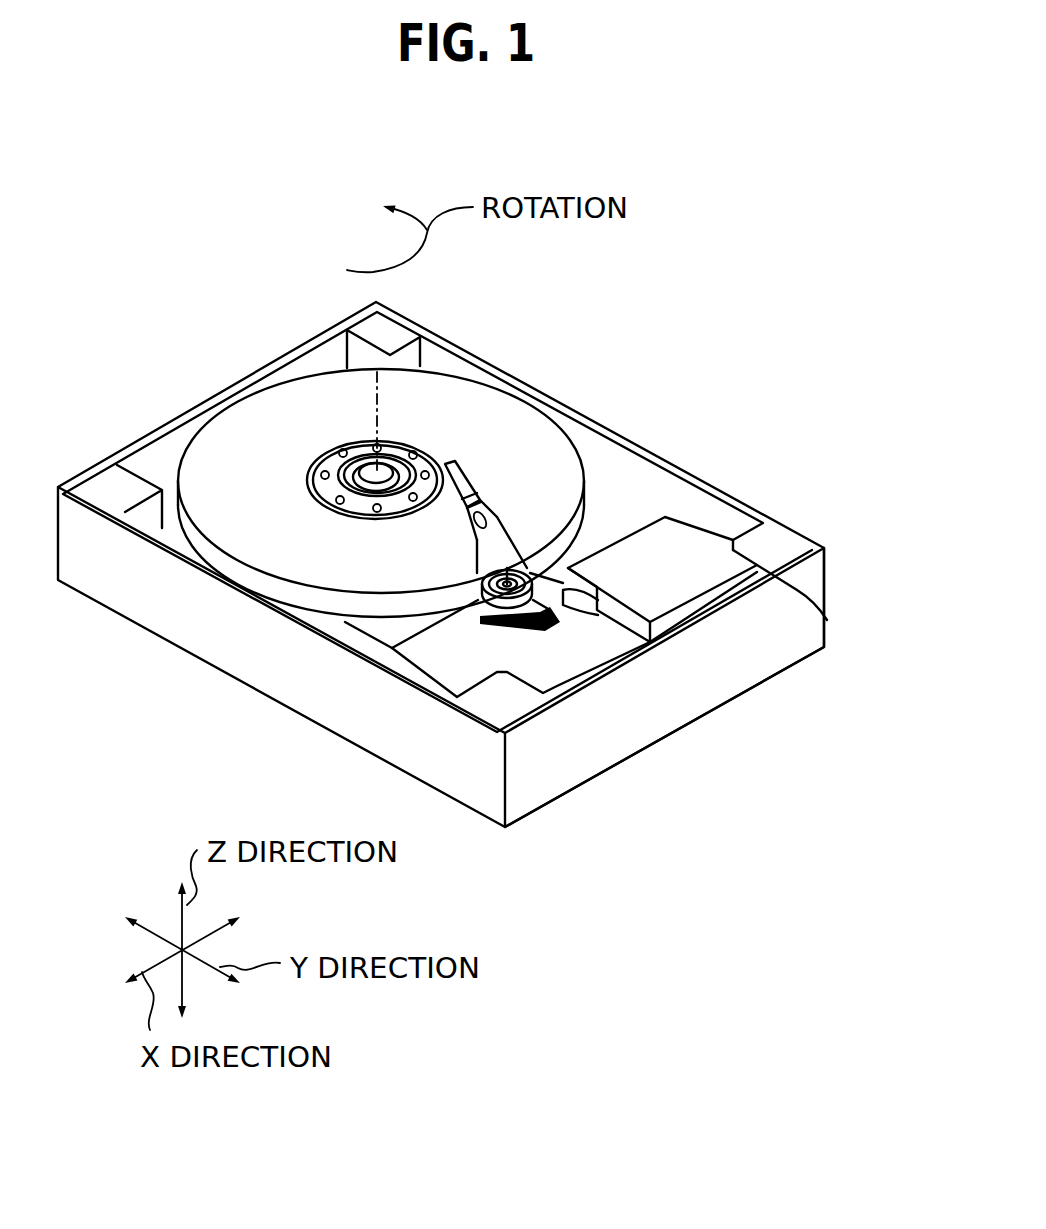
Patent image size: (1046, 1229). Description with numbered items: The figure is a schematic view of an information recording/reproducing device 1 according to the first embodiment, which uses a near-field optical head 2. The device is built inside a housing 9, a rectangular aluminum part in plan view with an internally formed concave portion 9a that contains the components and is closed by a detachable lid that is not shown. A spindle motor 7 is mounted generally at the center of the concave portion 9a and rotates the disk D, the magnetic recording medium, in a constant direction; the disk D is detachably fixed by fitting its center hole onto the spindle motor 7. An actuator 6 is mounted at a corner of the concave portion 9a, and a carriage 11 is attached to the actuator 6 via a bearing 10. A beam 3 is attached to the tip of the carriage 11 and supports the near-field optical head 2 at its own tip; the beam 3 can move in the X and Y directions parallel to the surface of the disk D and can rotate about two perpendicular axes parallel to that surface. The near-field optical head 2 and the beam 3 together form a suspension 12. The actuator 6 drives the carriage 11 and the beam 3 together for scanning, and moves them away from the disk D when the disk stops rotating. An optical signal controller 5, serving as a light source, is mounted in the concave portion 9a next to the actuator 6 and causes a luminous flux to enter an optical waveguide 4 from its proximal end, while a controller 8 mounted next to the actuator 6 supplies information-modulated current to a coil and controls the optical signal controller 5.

The information recording/reproducing device 1 is at (704, 179).
The near-field optical head 2 is at (452, 460).
The beam 3 is at (523, 567).
The optical waveguide 4 is at (588, 603).
The optical signal controller 5 is at (655, 583).
The actuator 6 is at (533, 618).
The spindle motor 7 is at (372, 458).
The controller 8 is at (827, 620).
The housing 9 is at (203, 407).
The concave portion 9a is at (165, 468).
The bearing 10 is at (530, 538).
The carriage 11 is at (493, 513).
The suspension 12 is at (692, 304).
The disk D is at (372, 628).